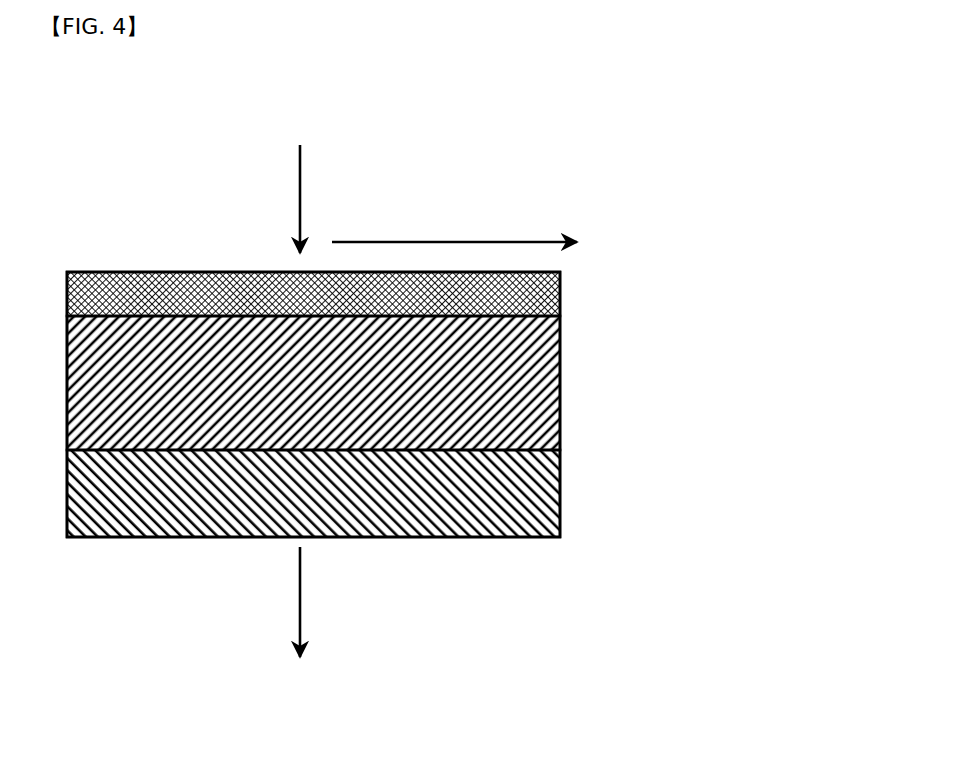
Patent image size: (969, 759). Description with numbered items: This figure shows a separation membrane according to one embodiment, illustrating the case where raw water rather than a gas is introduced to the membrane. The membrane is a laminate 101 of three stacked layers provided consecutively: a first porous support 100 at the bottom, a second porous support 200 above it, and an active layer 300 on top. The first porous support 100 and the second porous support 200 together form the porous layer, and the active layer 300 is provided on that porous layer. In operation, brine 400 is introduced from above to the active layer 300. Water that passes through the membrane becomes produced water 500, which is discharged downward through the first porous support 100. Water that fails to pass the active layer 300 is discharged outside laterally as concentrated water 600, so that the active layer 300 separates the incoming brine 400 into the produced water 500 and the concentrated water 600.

The first porous support 100 is at (560, 496).
The second porous support 200 is at (560, 403).
The active layer 300 is at (563, 288).
The laminate body 101 is at (685, 335).
The brine 400 is at (298, 173).
The produced water 500 is at (298, 630).
The concentrated water 600 is at (454, 210).